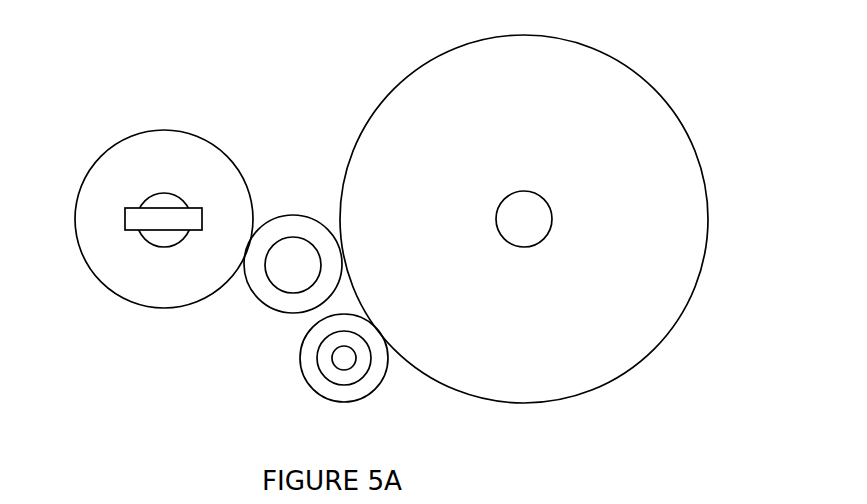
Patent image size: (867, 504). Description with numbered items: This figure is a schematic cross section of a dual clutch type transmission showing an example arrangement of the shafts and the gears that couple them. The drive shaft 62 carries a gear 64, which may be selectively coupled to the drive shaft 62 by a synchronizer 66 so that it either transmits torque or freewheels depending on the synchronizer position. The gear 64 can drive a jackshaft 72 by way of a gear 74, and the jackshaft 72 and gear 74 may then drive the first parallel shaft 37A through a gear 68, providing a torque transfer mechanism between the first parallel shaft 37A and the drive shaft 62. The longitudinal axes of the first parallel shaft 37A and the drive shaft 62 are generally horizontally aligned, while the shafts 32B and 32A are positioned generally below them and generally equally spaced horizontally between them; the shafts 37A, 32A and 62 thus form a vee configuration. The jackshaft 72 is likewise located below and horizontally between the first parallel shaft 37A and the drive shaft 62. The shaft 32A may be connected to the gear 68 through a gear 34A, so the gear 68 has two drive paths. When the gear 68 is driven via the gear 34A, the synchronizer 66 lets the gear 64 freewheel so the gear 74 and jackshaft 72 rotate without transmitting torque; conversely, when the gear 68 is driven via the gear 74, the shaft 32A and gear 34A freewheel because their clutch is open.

The drive shaft 62 is at (152, 190).
The gear 64 is at (83, 180).
The synchronizer 66 is at (125, 227).
The gear 68 is at (635, 365).
The jackshaft 72 is at (291, 237).
The gear 74 is at (282, 215).
The first parallel shaft 37A is at (546, 200).
The gear 34A is at (301, 348).
The shaft 32A is at (319, 369).
The shaft 32B is at (355, 360).